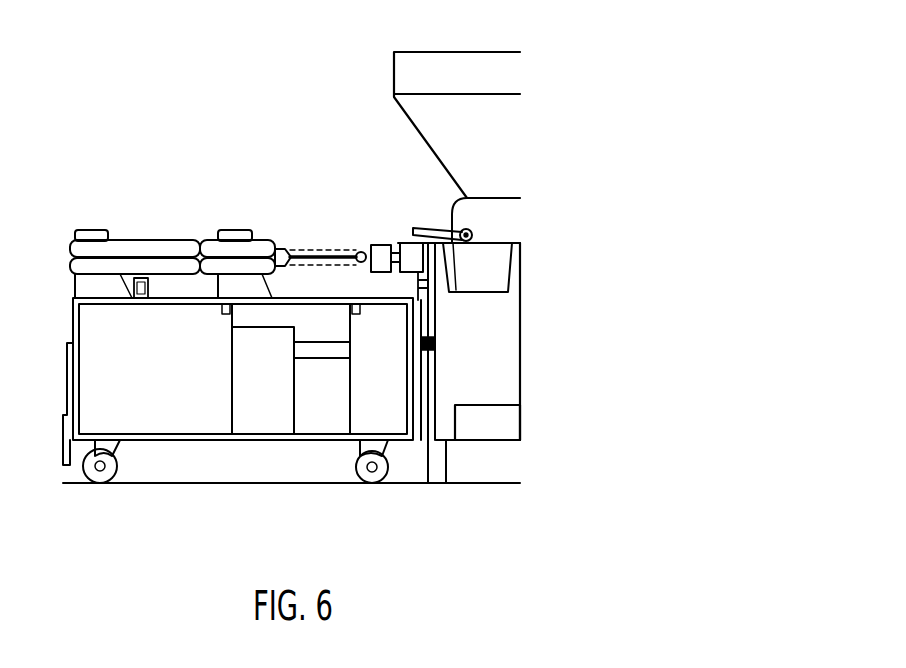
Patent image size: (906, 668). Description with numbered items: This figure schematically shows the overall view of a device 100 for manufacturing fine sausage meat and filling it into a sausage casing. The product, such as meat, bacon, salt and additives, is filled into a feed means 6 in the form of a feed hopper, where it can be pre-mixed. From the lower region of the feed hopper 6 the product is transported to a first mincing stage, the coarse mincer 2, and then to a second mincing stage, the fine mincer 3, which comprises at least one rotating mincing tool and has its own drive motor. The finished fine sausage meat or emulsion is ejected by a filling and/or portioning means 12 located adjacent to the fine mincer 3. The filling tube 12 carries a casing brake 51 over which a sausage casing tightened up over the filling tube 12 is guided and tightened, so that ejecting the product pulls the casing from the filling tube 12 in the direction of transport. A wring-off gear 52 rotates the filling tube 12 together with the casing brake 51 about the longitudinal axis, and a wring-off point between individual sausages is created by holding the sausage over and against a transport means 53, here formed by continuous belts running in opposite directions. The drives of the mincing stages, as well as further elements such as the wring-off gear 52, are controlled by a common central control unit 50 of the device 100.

The device 100 is at (320, 106).
The feed means 6 is at (394, 76).
The central control unit 50 is at (517, 421).
The transport means 53 is at (233, 240).
The casing brake 51 is at (270, 242).
The filling and/or portioning means 12 is at (313, 246).
The wring-off gear 52 is at (362, 251).
The fine mincer 3 is at (382, 245).
The coarse mincer 2 is at (411, 240).